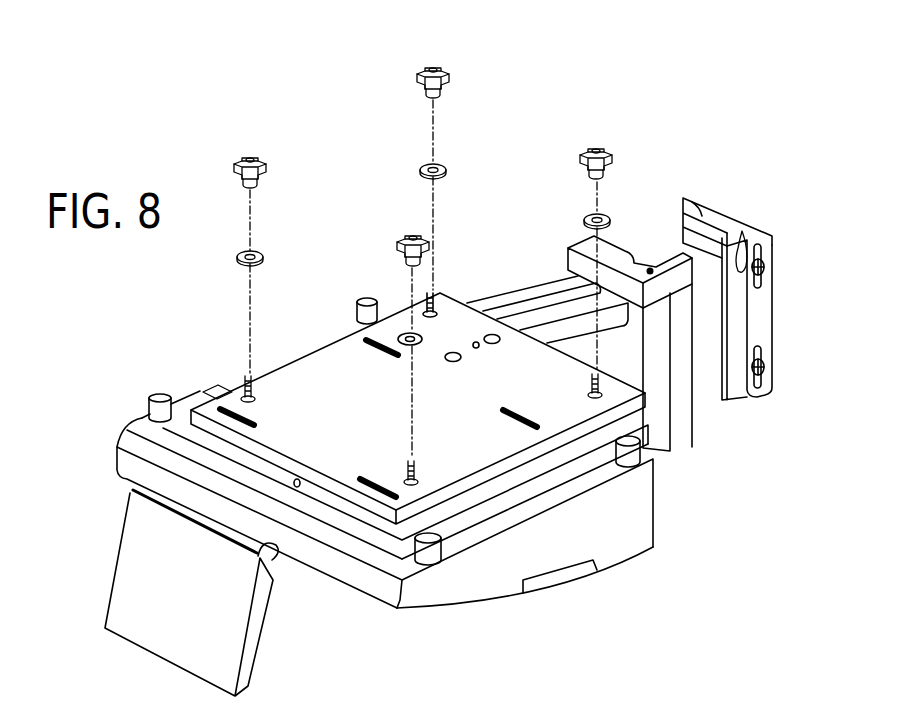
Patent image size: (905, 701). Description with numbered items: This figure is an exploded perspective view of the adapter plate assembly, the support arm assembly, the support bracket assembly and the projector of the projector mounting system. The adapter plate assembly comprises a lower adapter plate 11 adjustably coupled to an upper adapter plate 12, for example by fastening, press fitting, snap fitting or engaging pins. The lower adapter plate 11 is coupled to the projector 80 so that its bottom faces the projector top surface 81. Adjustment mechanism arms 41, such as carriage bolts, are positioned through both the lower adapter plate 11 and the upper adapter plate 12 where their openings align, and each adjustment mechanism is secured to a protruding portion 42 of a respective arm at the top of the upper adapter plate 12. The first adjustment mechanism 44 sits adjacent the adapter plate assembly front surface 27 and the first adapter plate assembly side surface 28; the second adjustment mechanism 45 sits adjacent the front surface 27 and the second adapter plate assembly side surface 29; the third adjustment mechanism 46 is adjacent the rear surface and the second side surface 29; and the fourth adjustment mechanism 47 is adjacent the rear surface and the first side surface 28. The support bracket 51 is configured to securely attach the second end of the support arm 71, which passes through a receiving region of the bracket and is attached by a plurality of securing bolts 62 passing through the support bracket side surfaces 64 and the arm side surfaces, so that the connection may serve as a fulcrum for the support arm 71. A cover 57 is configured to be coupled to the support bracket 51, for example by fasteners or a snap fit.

The lower adapter plate 11 is at (593, 478).
The upper adapter plate 12 is at (553, 465).
The adapter plate assembly front surface 27 is at (192, 430).
The first adapter plate assembly side surface 28 is at (440, 505).
The second adapter plate assembly side surface 29 is at (282, 362).
The adjustment mechanism arm 41 is at (233, 395).
The protruding portion 42 is at (243, 380).
The first adjustment mechanism 44 is at (407, 242).
The second adjustment mechanism 45 is at (247, 158).
The third adjustment mechanism 46 is at (433, 68).
The fourth adjustment mechanism 47 is at (593, 146).
The support bracket 51 is at (748, 240).
The cover 57 is at (678, 427).
The securing bolts 62 is at (740, 236).
The support bracket side surfaces 64 is at (737, 383).
The support arm 71 is at (660, 253).
The projector 80 is at (615, 547).
The projector top surface 81 is at (507, 493).